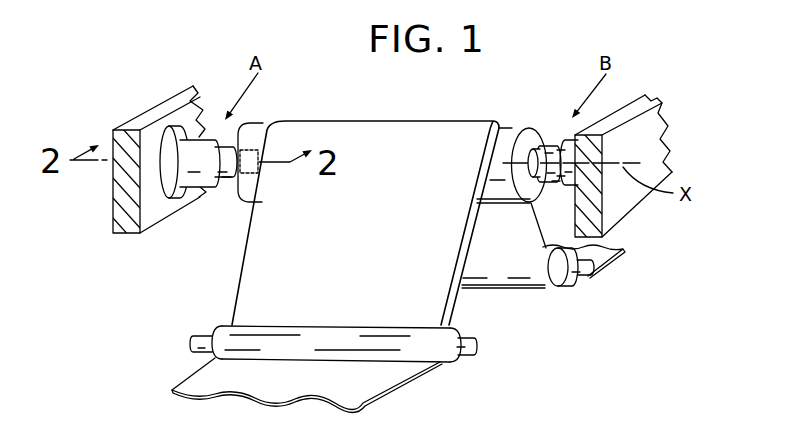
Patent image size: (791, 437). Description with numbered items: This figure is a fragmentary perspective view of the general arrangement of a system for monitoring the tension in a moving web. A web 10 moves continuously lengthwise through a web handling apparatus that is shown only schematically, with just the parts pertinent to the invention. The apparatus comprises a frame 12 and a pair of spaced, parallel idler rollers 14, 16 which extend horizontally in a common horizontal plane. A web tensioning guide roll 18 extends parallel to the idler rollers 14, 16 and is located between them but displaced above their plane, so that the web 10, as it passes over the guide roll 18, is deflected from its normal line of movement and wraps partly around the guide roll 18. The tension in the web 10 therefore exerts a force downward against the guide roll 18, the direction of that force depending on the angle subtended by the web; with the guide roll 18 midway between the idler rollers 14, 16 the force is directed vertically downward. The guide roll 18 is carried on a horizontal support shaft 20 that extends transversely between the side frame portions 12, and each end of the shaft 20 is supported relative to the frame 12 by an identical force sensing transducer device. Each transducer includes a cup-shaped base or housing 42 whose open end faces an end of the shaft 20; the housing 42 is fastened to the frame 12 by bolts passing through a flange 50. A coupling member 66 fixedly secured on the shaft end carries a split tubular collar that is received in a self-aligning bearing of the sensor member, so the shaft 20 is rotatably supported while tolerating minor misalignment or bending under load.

The web 10 is at (260, 265).
The frame 12 is at (160, 112).
The idler roller 14 is at (433, 349).
The idler roller 16 is at (552, 264).
The web tensioning guide roll 18 is at (514, 128).
The support shaft 20 is at (537, 150).
The cup-shaped base or housing 42 is at (200, 131).
The flange 50 is at (182, 133).
The coupling member 66 is at (228, 188).